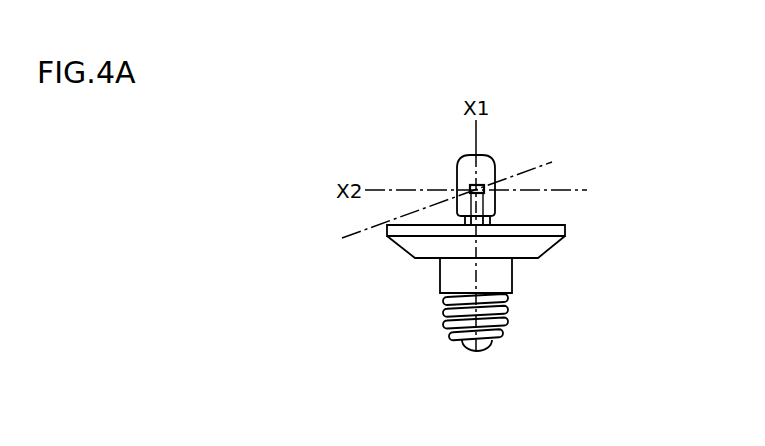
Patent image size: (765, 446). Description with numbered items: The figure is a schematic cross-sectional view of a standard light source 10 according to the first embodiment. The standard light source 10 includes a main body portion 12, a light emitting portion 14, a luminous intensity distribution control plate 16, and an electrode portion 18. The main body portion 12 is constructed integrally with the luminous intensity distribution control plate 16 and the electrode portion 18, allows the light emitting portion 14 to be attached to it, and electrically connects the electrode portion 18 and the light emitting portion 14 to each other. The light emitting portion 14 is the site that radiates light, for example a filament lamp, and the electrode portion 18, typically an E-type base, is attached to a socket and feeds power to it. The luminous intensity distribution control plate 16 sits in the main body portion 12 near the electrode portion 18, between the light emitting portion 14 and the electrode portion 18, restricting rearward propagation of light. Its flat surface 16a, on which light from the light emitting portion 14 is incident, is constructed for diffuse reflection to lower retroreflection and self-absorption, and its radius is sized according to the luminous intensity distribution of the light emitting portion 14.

The standard light source 10 is at (706, 128).
The main body portion 12 is at (500, 278).
The light emitting portion 14 is at (487, 163).
The luminous intensity distribution control plate 16 is at (540, 245).
The surface 16a is at (548, 224).
The electrode portion 18 is at (505, 320).